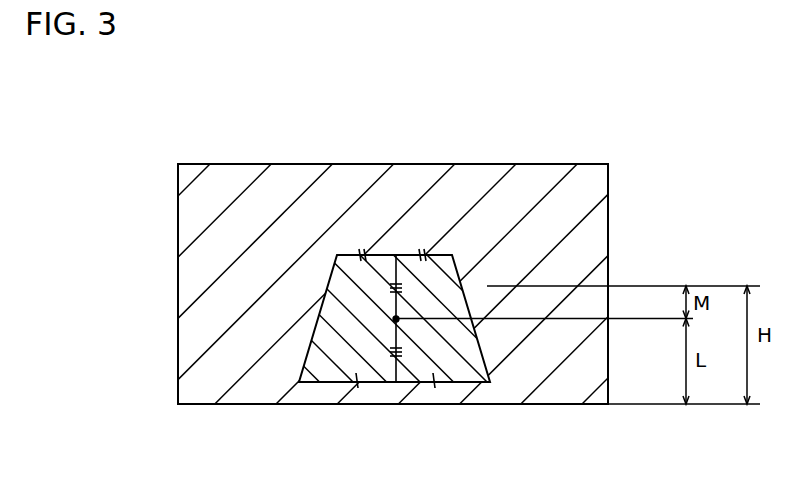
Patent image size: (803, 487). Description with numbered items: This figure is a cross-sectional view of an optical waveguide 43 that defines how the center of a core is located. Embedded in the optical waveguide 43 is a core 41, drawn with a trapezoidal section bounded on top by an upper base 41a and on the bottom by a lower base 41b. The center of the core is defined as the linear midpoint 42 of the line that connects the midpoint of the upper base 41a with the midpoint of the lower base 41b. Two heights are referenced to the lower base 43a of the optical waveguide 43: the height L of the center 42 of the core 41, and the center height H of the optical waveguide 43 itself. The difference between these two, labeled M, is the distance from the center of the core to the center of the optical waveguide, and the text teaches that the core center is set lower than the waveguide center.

The optical waveguide 43 is at (465, 178).
The lower base of the optical waveguide 43a is at (560, 405).
The core 41 is at (455, 381).
The upper base of the core 41a is at (386, 255).
The lower base of the core 41b is at (362, 384).
The center of the core 42 is at (396, 319).